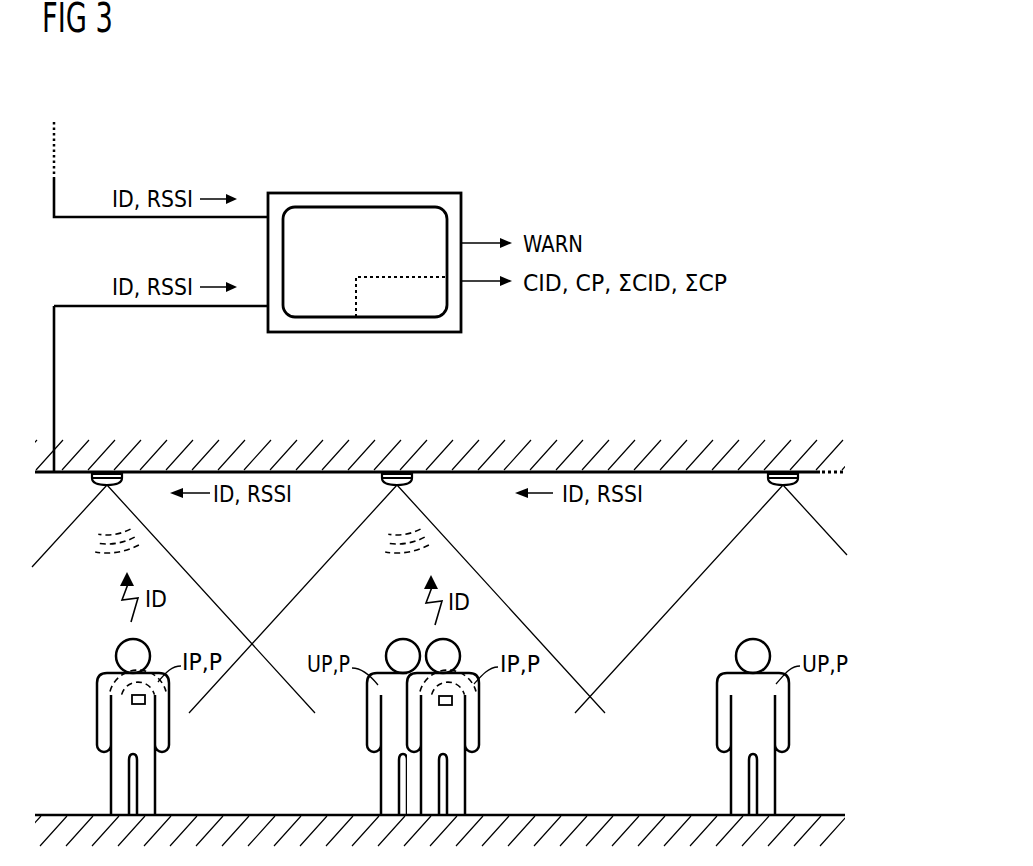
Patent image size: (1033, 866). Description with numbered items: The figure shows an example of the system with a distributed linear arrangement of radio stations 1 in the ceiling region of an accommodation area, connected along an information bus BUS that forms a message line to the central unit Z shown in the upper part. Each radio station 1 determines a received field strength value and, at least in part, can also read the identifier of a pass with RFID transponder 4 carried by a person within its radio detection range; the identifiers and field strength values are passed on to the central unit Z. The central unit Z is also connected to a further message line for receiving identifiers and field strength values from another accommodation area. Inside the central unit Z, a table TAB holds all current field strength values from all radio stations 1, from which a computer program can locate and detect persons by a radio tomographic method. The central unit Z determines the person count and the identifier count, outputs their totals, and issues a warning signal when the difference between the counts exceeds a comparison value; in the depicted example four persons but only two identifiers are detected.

The radio station 1 is at (107, 474).
The pass with RFID transponder 4 is at (146, 700).
The central unit Z is at (364, 262).
The table TAB is at (401, 297).
The information bus BUS is at (302, 472).